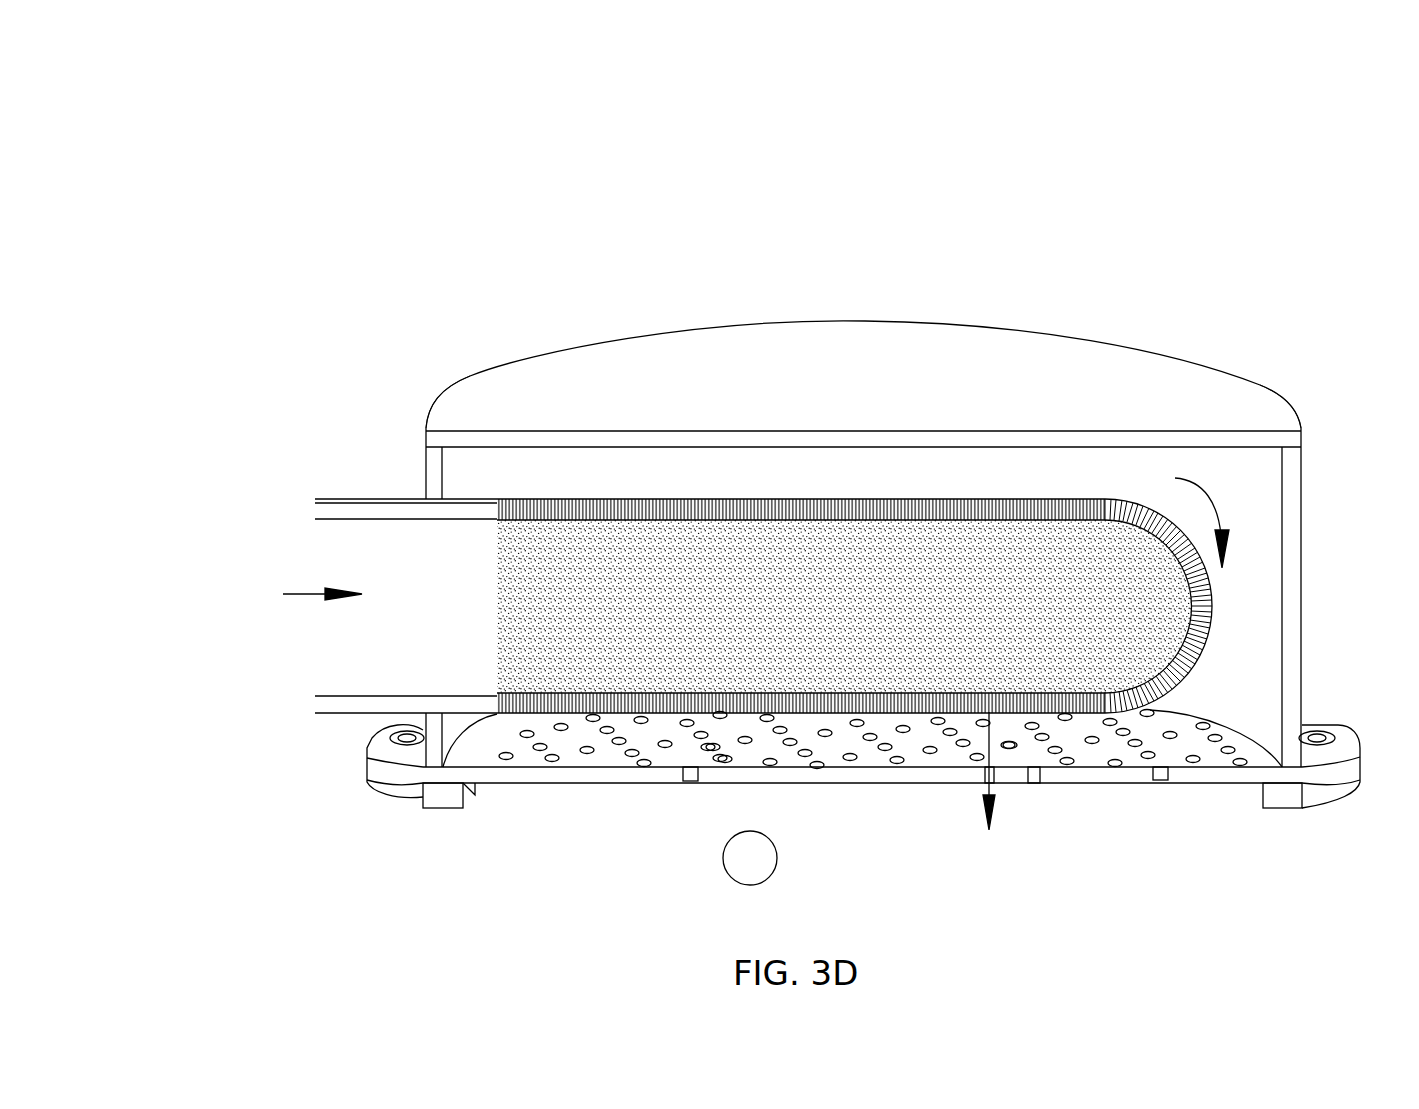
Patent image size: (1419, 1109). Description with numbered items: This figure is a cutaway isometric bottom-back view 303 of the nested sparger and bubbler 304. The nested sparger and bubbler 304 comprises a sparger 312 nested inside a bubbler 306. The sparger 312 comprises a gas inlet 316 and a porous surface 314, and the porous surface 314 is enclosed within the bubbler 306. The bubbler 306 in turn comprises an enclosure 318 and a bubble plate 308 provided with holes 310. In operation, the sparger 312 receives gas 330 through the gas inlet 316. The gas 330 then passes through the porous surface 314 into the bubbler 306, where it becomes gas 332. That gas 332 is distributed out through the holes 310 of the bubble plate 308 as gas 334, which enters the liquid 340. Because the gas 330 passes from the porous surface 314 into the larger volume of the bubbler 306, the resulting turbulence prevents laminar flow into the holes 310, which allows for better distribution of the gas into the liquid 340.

The cutaway isometric bottom-back view 303 is at (262, 141).
The nested sparger and bubbler 304 is at (533, 355).
The bubbler 306 is at (1268, 626).
The bubble plate 308 is at (1106, 742).
The holes 310 is at (1193, 762).
The sparger 312 is at (482, 512).
The porous surface 314 is at (877, 712).
The gas inlet 316 is at (382, 500).
The enclosure 318 is at (466, 400).
The gas 330 is at (295, 593).
The gas 332 is at (1173, 514).
The gas 334 is at (989, 788).
The liquid 340 is at (750, 858).